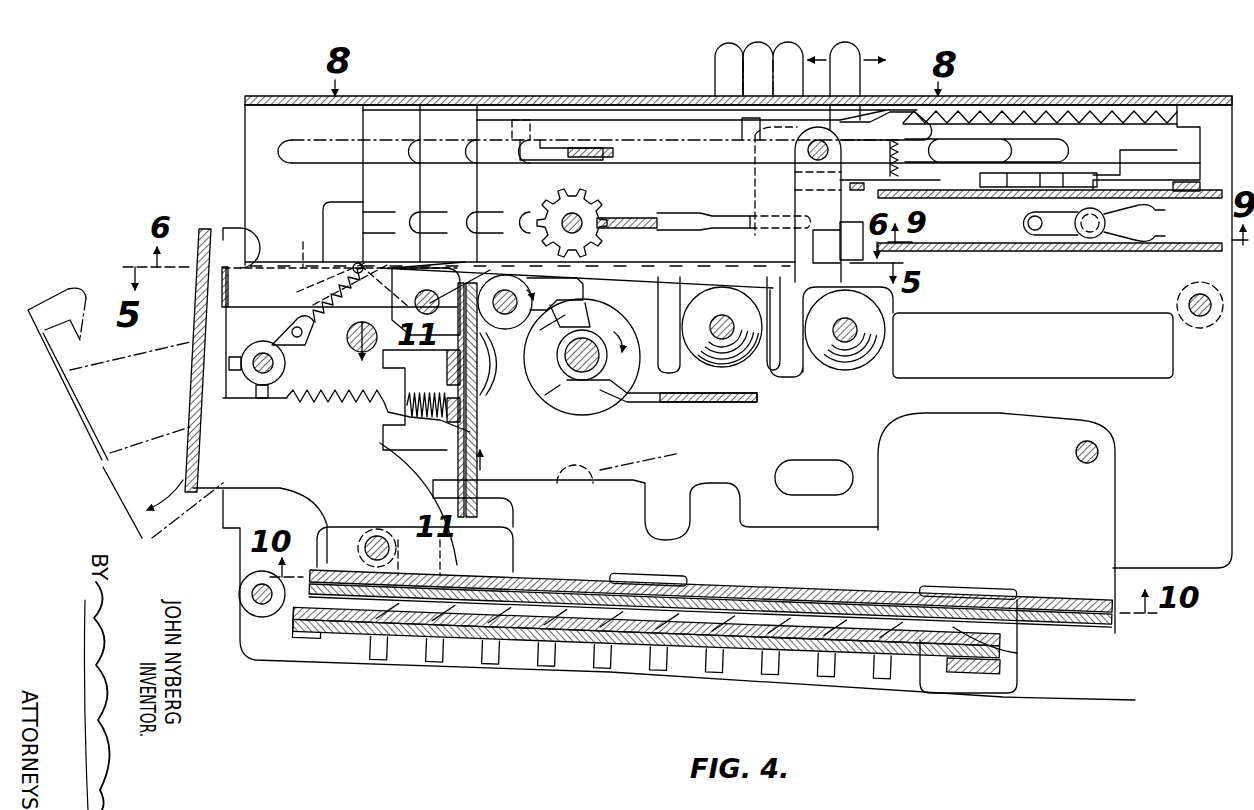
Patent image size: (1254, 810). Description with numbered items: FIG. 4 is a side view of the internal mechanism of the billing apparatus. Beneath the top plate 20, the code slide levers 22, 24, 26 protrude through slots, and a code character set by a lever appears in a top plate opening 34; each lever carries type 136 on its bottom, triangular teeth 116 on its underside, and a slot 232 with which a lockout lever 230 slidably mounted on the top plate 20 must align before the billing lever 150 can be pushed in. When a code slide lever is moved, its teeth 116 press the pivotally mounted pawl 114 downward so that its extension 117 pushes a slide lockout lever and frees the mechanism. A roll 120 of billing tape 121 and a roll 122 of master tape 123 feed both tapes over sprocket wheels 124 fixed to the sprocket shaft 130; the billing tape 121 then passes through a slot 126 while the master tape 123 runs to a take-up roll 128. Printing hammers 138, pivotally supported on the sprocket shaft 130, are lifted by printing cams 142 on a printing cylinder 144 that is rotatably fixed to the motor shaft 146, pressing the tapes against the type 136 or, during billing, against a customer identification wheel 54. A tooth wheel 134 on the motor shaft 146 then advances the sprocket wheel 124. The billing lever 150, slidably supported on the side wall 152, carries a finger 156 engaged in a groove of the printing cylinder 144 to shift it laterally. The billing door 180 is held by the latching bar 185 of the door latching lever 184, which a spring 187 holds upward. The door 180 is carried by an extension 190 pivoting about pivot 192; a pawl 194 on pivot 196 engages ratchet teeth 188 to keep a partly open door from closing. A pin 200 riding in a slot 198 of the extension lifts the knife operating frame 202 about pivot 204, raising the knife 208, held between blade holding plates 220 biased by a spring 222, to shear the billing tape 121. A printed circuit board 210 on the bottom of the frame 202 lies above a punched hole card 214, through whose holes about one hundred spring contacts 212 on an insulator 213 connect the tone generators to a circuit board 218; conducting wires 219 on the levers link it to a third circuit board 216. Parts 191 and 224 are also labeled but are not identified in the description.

The top plate 20 is at (452, 96).
The code slide lever 22 is at (731, 48).
The code slide lever 24 is at (790, 48).
The code slide lever 26 is at (848, 48).
The top plate opening 34 is at (535, 96).
The customer identification wheel 54 is at (603, 206).
The pawl 114 is at (930, 128).
The triangular teeth 116 is at (1020, 115).
The extension 117 is at (818, 247).
The roll of billing tape 120 is at (750, 356).
The billing tape 121 is at (677, 287).
The roll of master tape 122 is at (846, 368).
The master tape 123 is at (712, 230).
The sprocket wheel 124 is at (509, 364).
The slot 126 is at (475, 408).
The take-up roll 128 is at (355, 353).
The sprocket shaft 130 is at (440, 287).
The tooth wheel 134 is at (618, 405).
The type 136 is at (525, 262).
The printing hammer 138 is at (583, 292).
The printing cam 142 is at (557, 353).
The printing cylinder 144 is at (612, 332).
The motor shaft 146 is at (556, 372).
The billing lever 150 is at (729, 405).
The side wall 152 is at (1039, 523).
The finger 156 is at (592, 393).
The billing door 180 is at (193, 338).
The door latching lever 184 is at (272, 289).
The latching bar 185 is at (275, 305).
The spring 187 is at (302, 268).
The ratchet teeth 188 is at (368, 414).
The door extension 190 is at (200, 540).
The spring 191 is at (338, 309).
The pivot 192 is at (264, 605).
The pawl 194 is at (306, 346).
The pivot 196 is at (255, 365).
The slot 198 is at (380, 530).
The pin 200 is at (450, 560).
The knife operating frame 202 is at (642, 482).
The pivot 204 is at (1100, 449).
The knife 208 is at (478, 430).
The printed circuit board 210 is at (1113, 600).
The spring contacts 212 is at (525, 640).
The insulator 213 is at (935, 640).
The punched hole card 214 is at (1017, 653).
The third circuit board 216 is at (950, 199).
The printed circuit board 218 is at (1000, 252).
The conducting wire 219 is at (1080, 238).
The blade holding plates 220 is at (1158, 209).
The spring 222 is at (1158, 235).
The stop 224 is at (618, 460).
The lockout lever 230 is at (606, 148).
The slots 232 is at (530, 128).